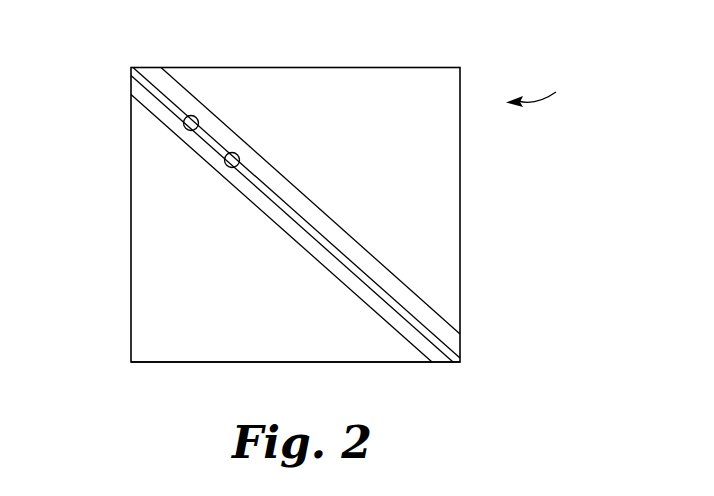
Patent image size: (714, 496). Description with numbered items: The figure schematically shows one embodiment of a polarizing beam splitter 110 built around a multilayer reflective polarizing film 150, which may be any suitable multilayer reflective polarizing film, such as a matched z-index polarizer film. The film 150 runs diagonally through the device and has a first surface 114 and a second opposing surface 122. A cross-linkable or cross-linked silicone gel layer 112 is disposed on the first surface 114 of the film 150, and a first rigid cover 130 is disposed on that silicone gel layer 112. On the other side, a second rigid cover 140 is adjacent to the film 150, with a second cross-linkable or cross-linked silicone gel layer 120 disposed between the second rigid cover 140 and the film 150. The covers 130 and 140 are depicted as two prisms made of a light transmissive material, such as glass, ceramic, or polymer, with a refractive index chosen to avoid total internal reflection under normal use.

The polarizing beam splitter 110 is at (554, 90).
The cross-linkable or cross-linked silicone gel layer 112 is at (160, 74).
The first surface 114 is at (203, 132).
The second cross-linkable or cross-linked silicone gel layer 120 is at (141, 93).
The second opposing surface 122 is at (230, 169).
The first rigid cover 130 is at (323, 80).
The second rigid cover 140 is at (183, 349).
The multilayer reflective polarizing film 150 is at (130, 67).